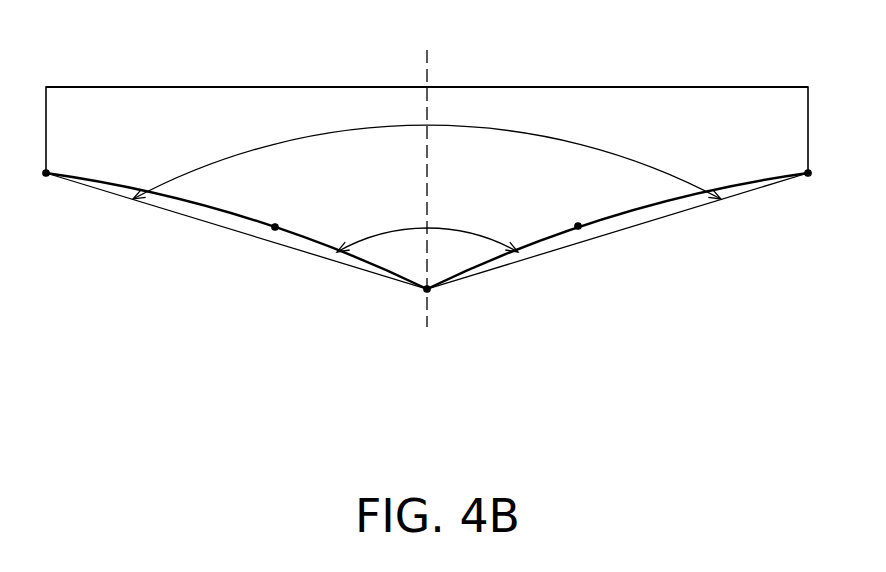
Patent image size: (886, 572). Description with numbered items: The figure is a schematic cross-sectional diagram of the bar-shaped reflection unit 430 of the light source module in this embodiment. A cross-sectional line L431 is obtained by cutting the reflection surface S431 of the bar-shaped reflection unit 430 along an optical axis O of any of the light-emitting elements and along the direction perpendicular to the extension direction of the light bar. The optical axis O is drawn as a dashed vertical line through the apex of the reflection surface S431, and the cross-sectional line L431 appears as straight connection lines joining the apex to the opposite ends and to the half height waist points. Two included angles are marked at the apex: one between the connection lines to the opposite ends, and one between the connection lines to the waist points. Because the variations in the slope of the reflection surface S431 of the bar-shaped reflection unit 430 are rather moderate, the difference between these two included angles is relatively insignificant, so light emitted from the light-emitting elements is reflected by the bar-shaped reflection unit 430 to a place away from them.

The bar-shaped reflection unit 430 is at (708, 108).
The reflection surface S431 is at (197, 202).
The cross-sectional line L431 is at (345, 262).
The optical axis O is at (425, 72).